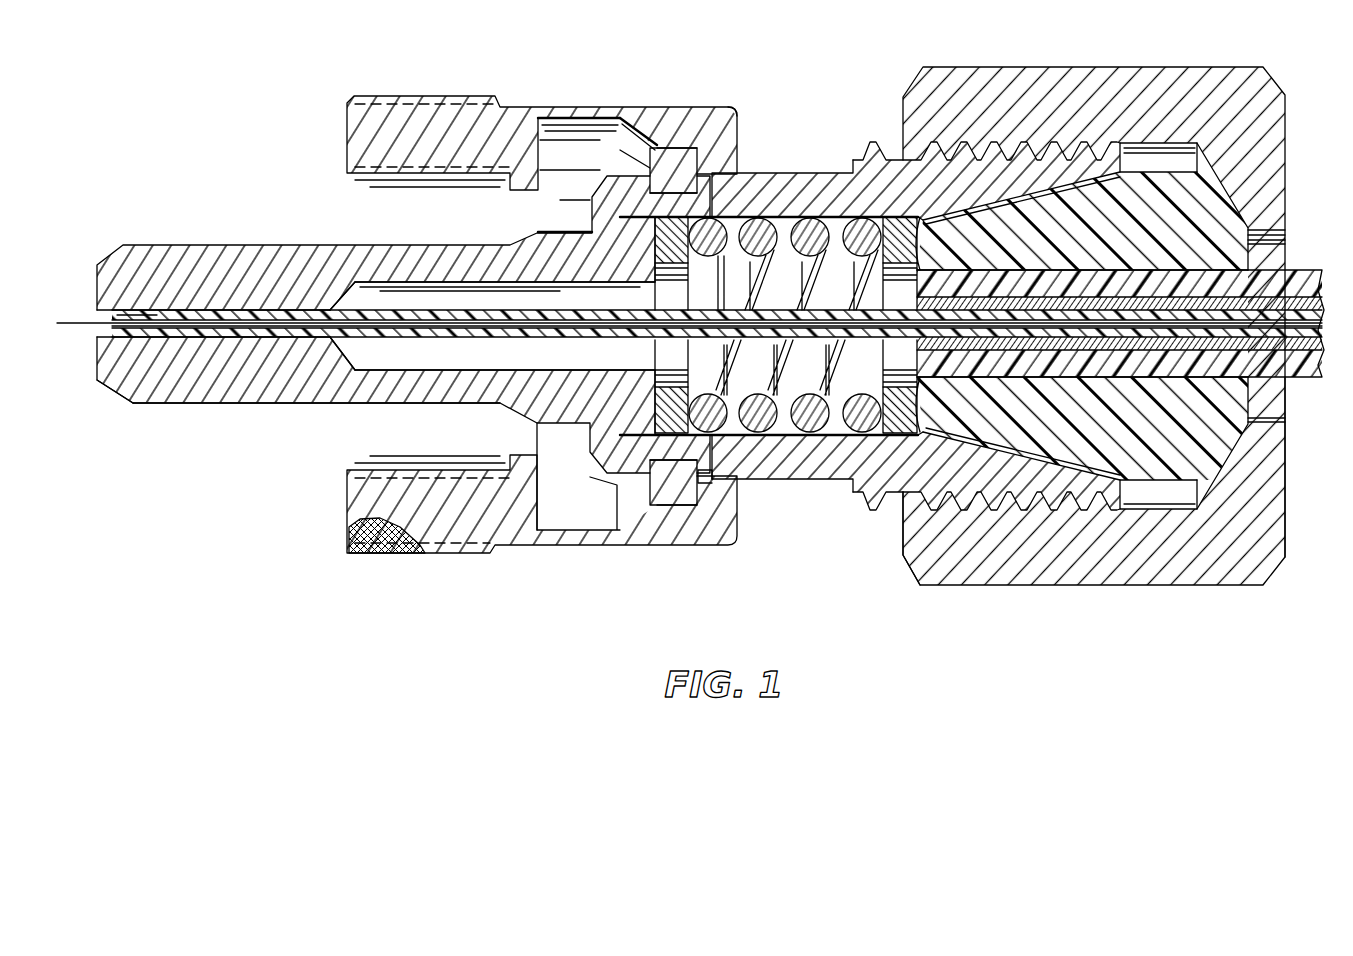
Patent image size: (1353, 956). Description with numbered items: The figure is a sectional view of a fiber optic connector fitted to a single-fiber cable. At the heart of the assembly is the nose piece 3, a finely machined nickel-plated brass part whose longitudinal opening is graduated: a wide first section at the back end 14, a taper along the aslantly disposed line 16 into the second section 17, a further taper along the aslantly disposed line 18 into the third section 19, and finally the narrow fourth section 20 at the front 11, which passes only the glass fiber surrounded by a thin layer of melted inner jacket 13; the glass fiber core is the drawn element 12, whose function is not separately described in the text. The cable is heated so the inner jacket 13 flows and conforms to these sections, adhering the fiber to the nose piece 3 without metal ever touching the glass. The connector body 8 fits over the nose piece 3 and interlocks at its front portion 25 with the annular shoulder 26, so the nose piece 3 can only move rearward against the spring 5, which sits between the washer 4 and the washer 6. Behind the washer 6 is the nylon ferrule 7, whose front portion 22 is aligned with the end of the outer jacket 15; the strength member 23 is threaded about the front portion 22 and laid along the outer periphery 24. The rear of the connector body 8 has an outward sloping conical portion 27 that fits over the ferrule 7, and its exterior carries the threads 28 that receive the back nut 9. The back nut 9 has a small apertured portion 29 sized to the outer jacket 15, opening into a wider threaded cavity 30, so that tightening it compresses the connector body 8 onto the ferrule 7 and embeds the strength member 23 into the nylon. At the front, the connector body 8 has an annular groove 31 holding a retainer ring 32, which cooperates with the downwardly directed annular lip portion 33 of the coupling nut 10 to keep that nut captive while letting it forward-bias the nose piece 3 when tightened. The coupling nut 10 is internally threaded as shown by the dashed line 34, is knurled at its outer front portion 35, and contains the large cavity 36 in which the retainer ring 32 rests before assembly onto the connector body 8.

The nose piece 3 is at (168, 405).
The washer 4 is at (722, 217).
The spring 5 is at (815, 225).
The washer 6 is at (893, 160).
The ferrule 7 is at (1243, 250).
The connector body 8 is at (780, 485).
The back nut 9 is at (1143, 583).
The coupling nut 10 is at (580, 545).
The front of the nose piece 11 is at (93, 335).
The cable sheath 12 is at (214, 315).
The inner jacket 13 is at (395, 340).
The back end of the nose piece 14 is at (617, 424).
The outer jacket 15 is at (1297, 387).
The aslantly disposed line 16 is at (343, 287).
The second section 17 is at (262, 337).
The aslantly disposed line 18 is at (163, 315).
The third section 19 is at (140, 335).
The fourth section 20 is at (107, 335).
The front portion of the ferrule 22 is at (938, 415).
The strength member 23 is at (918, 280).
The outer periphery of the ferrule 24 is at (1053, 190).
The front portion of the connector body 25 is at (616, 150).
The annular shoulder 26 is at (623, 213).
The outward sloping conical portion 27 is at (912, 505).
The threads 28 is at (866, 500).
The apertured portion 29 is at (1287, 421).
The cavity 30 is at (1160, 150).
The annular groove 31 is at (740, 487).
The retainer ring 32 is at (678, 503).
The annular lip portion 33 is at (738, 128).
The dashed line 34 is at (388, 172).
The outer front portion of the coupling nut 35 is at (388, 553).
The cavity 36 is at (574, 137).